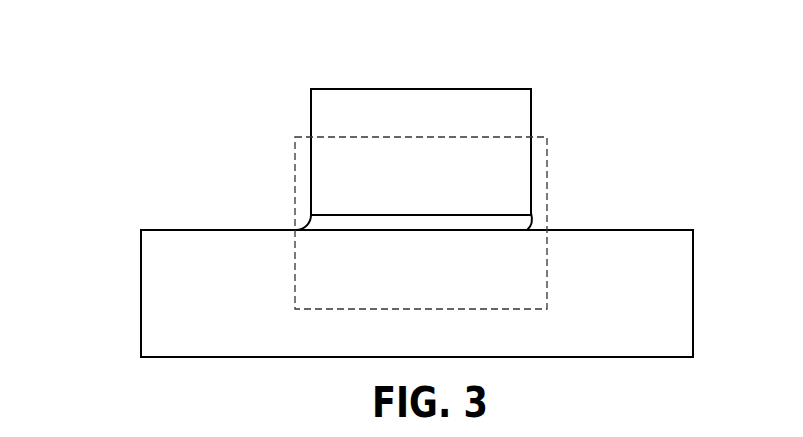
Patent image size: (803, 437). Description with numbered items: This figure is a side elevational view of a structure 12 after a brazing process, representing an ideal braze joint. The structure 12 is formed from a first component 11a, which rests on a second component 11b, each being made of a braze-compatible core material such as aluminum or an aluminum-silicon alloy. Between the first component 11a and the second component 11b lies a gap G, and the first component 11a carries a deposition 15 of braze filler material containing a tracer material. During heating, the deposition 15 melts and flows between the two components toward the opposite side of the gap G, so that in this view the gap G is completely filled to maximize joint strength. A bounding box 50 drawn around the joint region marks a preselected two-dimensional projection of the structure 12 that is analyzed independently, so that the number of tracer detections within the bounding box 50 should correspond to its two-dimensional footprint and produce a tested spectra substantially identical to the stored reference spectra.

The structure 12 is at (152, 102).
The first component 11a is at (375, 89).
The second component 11b is at (141, 272).
The deposition of braze filler material 15 is at (305, 225).
The gap G is at (537, 222).
The bounding box 50 is at (452, 142).